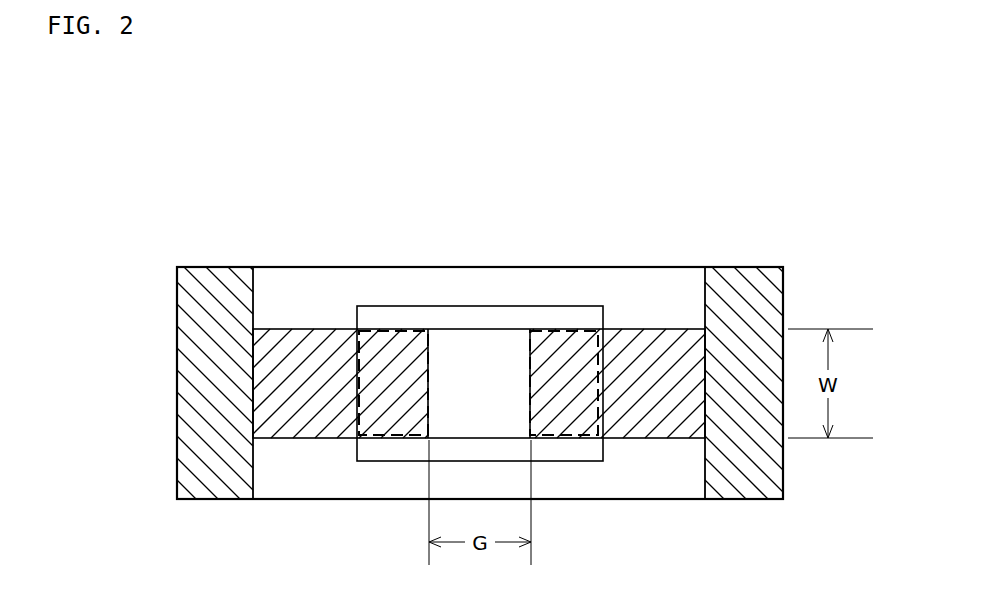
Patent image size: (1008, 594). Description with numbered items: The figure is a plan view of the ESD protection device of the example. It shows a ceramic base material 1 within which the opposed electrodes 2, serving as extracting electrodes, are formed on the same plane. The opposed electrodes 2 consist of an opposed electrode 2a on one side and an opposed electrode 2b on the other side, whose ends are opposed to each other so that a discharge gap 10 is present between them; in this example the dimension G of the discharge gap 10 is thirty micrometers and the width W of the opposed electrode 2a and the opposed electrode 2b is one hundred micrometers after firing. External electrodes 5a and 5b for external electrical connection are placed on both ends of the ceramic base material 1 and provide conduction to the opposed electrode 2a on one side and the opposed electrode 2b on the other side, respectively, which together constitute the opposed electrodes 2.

The ceramic base material 1 is at (690, 267).
The opposed electrodes 2 is at (418, 163).
The opposed electrode on one side 2a is at (380, 330).
The opposed electrode on the other side 2b is at (545, 332).
The external electrode 5a is at (176, 381).
The external electrode 5b is at (785, 312).
The discharge gap 10 is at (477, 380).